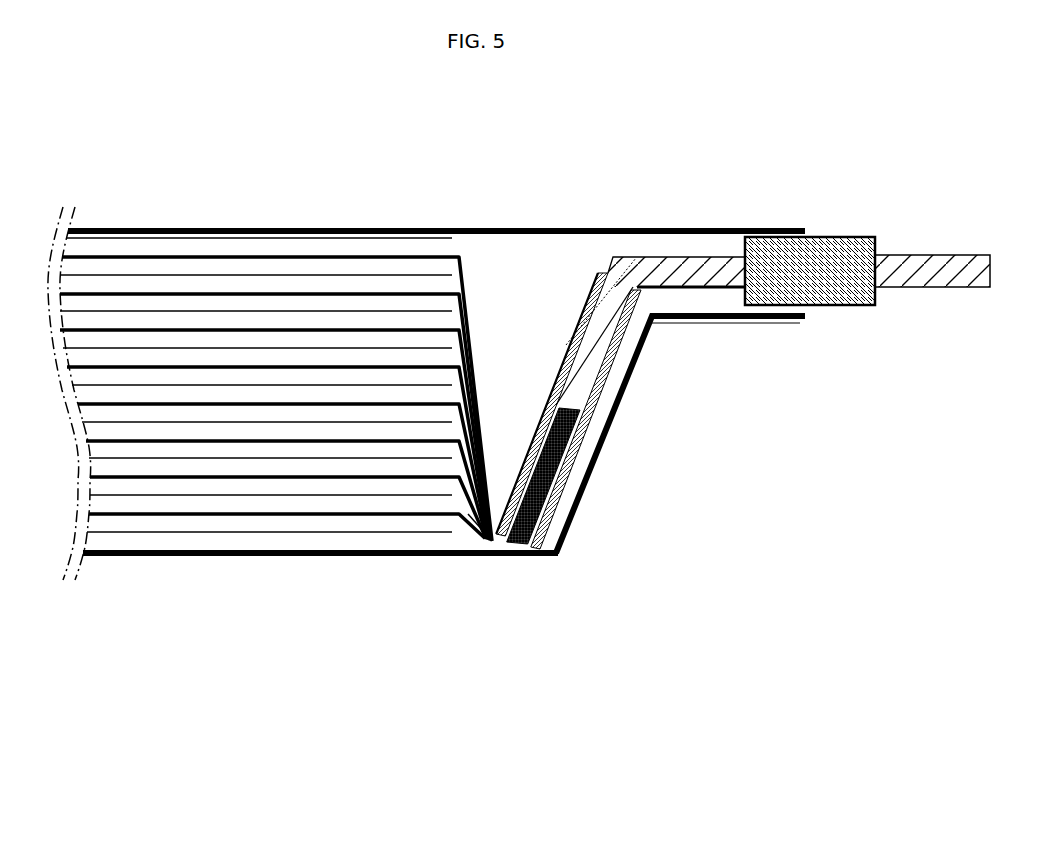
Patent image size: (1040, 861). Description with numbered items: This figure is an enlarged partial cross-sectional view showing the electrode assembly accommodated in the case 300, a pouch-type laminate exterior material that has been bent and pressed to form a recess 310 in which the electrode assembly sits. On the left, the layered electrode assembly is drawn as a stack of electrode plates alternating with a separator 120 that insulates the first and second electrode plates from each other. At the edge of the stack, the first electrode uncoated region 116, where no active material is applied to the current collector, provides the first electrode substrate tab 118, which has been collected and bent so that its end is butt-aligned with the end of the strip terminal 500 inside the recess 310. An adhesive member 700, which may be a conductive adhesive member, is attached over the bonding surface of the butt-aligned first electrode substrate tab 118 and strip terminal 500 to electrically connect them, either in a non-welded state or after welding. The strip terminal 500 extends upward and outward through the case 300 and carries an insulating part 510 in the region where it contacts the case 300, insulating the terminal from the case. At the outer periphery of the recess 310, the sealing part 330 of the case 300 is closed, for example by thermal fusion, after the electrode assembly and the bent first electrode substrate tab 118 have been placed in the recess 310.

The case 300 is at (149, 209).
The separator 120 is at (386, 236).
The first electrode uncoated region 116 is at (467, 518).
The recess 310 is at (512, 271).
The strip terminal 500 is at (578, 383).
The adhesive member 700 is at (572, 460).
The first electrode substrate tab 118 is at (540, 508).
The sealing part 330 is at (727, 323).
The insulating part 510 is at (848, 306).